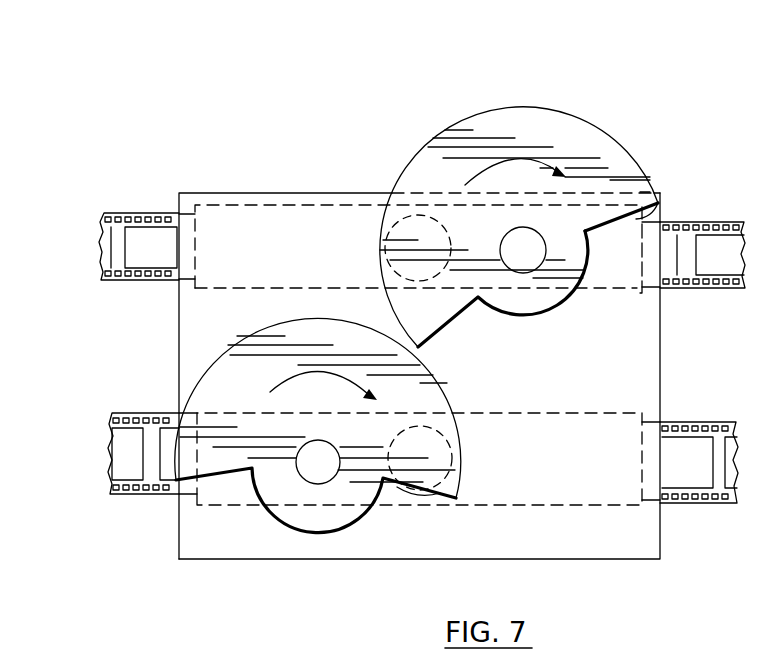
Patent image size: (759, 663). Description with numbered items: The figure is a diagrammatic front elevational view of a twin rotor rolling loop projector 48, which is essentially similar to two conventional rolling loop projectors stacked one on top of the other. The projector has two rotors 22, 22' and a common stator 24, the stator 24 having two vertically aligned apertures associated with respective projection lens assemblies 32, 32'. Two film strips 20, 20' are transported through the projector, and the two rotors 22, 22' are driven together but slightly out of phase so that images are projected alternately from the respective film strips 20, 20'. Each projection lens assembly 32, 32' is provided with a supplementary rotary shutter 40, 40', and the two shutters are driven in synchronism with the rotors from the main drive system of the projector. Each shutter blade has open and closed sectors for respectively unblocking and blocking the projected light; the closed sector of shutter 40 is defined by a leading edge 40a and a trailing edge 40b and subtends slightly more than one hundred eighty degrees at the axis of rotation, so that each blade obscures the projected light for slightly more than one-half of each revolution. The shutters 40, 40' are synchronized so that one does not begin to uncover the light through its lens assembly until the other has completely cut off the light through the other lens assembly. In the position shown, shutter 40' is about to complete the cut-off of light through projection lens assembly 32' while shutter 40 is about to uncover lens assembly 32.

The film strip 20 is at (422, 215).
The film strip 20' is at (410, 425).
The rotor 22 is at (418, 284).
The rotor 22' is at (419, 435).
The stator 24 is at (648, 544).
The projection lens assembly 32 is at (372, 248).
The projection lens assembly 32' is at (415, 507).
The shutter 40 is at (551, 194).
The leading edge 40a is at (662, 217).
The trailing edge 40b is at (445, 322).
The shutter 40' is at (352, 425).
The twin rotor rolling loop projector 48 is at (280, 179).